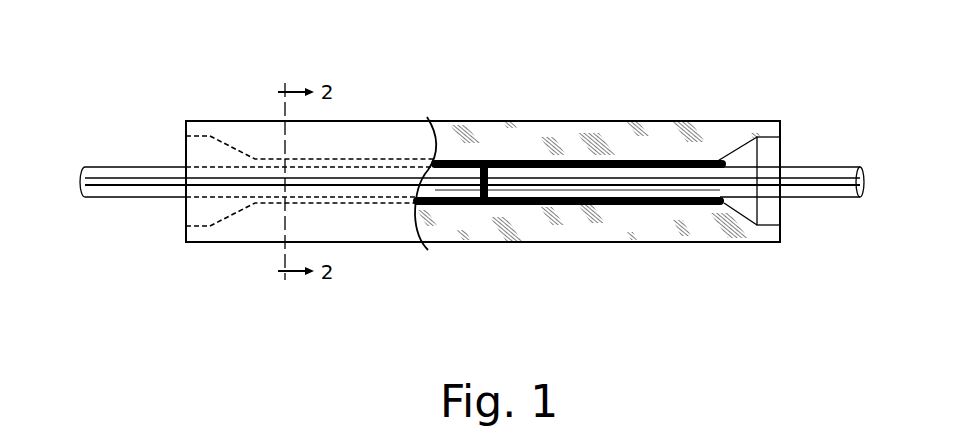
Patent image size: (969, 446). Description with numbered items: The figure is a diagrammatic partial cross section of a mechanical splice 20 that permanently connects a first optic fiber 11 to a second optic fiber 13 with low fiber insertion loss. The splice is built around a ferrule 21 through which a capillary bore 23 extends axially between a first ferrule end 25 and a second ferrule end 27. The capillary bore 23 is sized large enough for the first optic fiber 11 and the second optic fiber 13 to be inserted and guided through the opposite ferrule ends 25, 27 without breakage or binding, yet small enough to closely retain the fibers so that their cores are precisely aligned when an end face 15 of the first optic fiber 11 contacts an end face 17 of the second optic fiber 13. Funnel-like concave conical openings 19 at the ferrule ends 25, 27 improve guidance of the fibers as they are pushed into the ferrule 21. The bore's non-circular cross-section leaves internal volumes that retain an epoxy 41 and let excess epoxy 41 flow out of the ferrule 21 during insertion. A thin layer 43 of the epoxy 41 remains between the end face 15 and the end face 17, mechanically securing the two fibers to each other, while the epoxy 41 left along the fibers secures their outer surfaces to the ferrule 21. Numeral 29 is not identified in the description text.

The first optic fiber 11 is at (113, 166).
The second optic fiber 13 is at (827, 165).
The end face of the first optic fiber 15 is at (497, 168).
The end face of the second optic fiber 17 is at (450, 207).
The concave conical openings 19 is at (192, 210).
The mechanical splice 20 is at (433, 280).
The ferrule 21 is at (356, 121).
The capillary bore 23 is at (409, 160).
The first ferrule end 25 is at (188, 137).
The second ferrule end 27 is at (782, 129).
The potting material 29 is at (595, 207).
The epoxy 41 is at (667, 160).
The thin layer of epoxy 43 is at (482, 204).